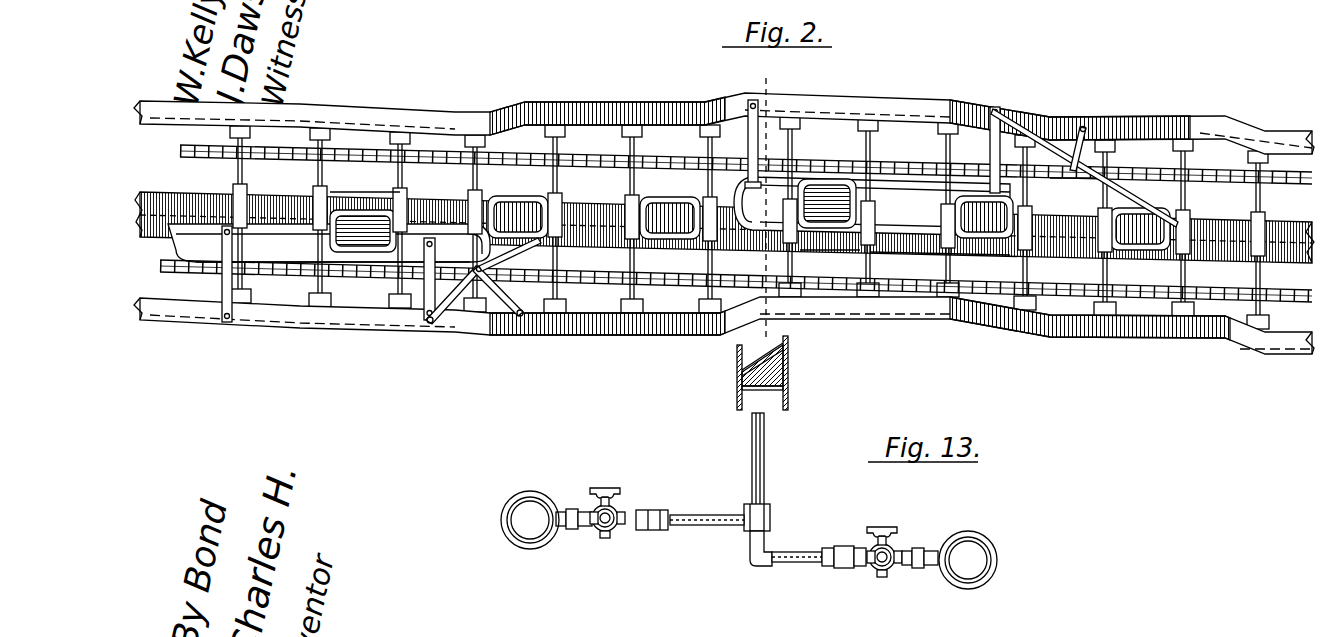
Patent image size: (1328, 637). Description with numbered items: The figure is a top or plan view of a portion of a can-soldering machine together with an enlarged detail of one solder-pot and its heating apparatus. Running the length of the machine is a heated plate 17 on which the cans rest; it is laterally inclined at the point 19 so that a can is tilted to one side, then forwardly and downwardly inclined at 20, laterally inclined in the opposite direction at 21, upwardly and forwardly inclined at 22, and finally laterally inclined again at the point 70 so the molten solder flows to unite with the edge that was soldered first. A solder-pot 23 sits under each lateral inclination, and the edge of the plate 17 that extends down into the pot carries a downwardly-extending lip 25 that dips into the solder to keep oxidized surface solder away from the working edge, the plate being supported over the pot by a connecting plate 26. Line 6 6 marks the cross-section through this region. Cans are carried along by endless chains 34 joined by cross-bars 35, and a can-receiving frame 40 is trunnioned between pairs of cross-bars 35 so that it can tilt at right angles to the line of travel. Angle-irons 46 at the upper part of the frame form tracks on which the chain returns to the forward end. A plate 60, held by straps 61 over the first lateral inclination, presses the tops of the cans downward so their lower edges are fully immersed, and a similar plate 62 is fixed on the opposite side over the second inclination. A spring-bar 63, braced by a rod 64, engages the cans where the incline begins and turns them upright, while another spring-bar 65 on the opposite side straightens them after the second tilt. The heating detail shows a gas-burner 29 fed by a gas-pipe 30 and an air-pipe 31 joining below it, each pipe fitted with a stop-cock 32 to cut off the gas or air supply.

In FIG. 2, the section line 6 is at (760, 199).
In FIG. 2, the plate 17 is at (160, 188).
In FIG. 2, the laterally-inclined portion 19 is at (365, 183).
In FIG. 2, the forwardly and downwardly inclined portion 20 is at (674, 151).
In FIG. 2, the second laterally-inclined portion 21 is at (830, 262).
In FIG. 2, the upwardly and forwardly inclined portion 22 is at (1075, 195).
In FIG. 2, the solder-pot 23 is at (790, 390).
In FIG. 2, the lip 25 is at (737, 374).
In FIG. 2, the supporting plate 26 is at (790, 362).
In FIG. 13, the gas-burner 29 is at (775, 472).
In FIG. 13, the gas-pipe 30 is at (706, 513).
In FIG. 13, the air-pipe 31 is at (798, 552).
In FIG. 13, the stop-cock 32 is at (627, 489).
In FIG. 2, the endless chain 34 is at (516, 150).
In FIG. 2, the cross-bar 35 is at (556, 190).
In FIG. 2, the frame 40 is at (376, 208).
In FIG. 2, the angle-iron 46 is at (468, 107).
In FIG. 2, the plate 60 is at (298, 252).
In FIG. 2, the strap 61 is at (222, 280).
In FIG. 2, the plate 62 is at (888, 182).
In FIG. 2, the spring-bar 63 is at (492, 268).
In FIG. 2, the brace rod 64 is at (500, 300).
In FIG. 2, the spring-bar 65 is at (1112, 196).
In FIG. 2, the third laterally-inclined point 70 is at (893, 258).